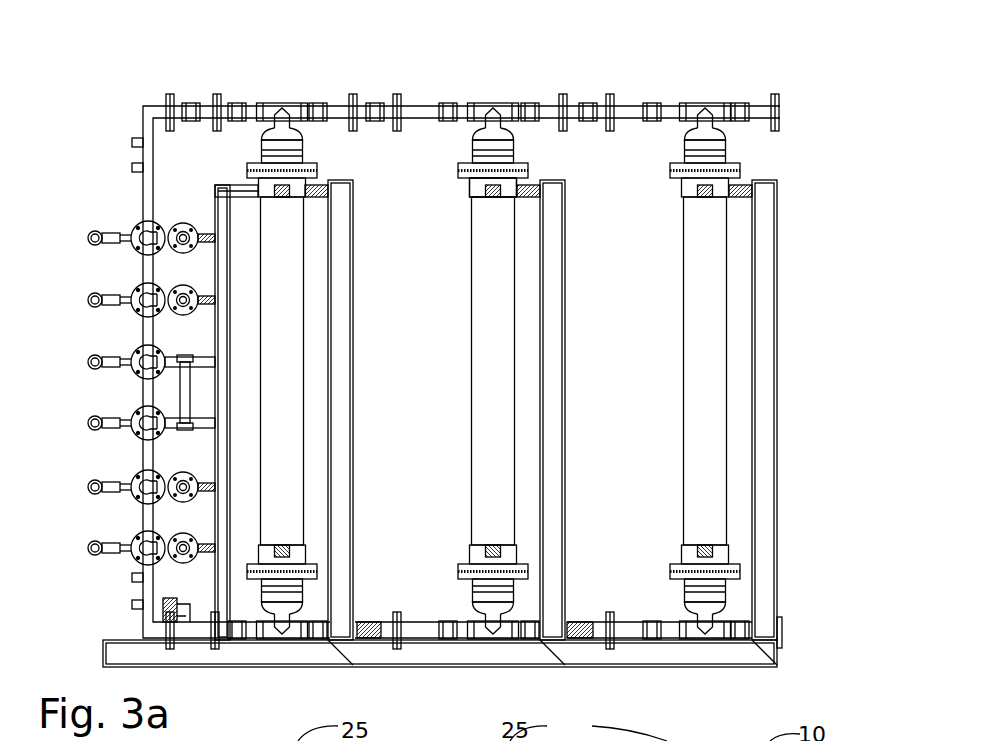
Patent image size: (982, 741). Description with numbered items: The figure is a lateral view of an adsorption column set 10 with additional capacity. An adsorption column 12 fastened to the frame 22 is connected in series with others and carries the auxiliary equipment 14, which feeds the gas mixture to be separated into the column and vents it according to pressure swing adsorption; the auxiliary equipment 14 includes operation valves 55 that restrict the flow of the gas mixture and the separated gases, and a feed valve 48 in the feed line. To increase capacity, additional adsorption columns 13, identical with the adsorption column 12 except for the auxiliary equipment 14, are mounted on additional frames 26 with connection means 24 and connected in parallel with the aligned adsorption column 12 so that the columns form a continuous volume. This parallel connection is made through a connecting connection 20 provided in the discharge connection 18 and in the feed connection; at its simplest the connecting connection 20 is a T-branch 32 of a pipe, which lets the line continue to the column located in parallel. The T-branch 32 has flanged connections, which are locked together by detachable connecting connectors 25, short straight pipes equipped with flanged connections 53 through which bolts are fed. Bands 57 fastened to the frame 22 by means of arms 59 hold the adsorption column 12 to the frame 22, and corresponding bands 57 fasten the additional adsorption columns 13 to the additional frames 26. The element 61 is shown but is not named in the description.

The adsorption column set 10 is at (706, 68).
The adsorption column 12 is at (290, 375).
The additional adsorption column 13 is at (505, 375).
The auxiliary equipment 14 is at (73, 425).
The discharge connection 18 is at (207, 207).
The connecting connection 20 is at (472, 72).
The frame 22 is at (295, 653).
The connection means 24 is at (355, 672).
The connecting connector 25 is at (284, 97).
The additional frame 26 is at (790, 300).
The T-branch 32 is at (210, 100).
The feed valve 48 is at (190, 616).
The flanged connection 53 is at (315, 166).
The operation valve 55 is at (95, 282).
The band 57 is at (488, 198).
The arm 59 is at (523, 197).
The end flange 61 is at (781, 103).